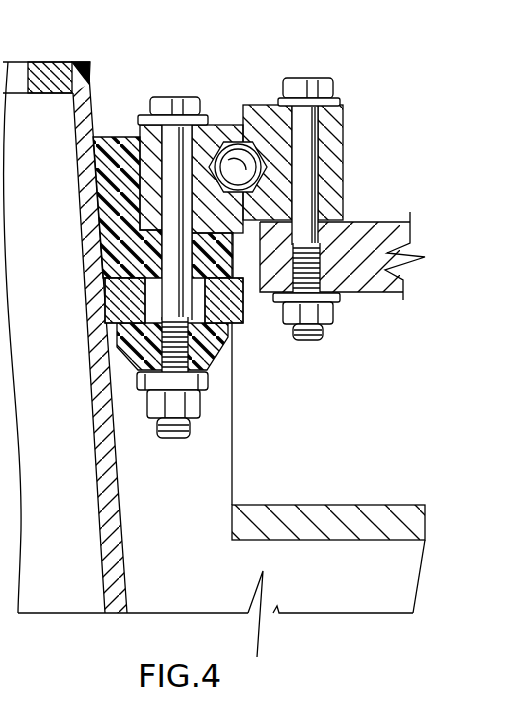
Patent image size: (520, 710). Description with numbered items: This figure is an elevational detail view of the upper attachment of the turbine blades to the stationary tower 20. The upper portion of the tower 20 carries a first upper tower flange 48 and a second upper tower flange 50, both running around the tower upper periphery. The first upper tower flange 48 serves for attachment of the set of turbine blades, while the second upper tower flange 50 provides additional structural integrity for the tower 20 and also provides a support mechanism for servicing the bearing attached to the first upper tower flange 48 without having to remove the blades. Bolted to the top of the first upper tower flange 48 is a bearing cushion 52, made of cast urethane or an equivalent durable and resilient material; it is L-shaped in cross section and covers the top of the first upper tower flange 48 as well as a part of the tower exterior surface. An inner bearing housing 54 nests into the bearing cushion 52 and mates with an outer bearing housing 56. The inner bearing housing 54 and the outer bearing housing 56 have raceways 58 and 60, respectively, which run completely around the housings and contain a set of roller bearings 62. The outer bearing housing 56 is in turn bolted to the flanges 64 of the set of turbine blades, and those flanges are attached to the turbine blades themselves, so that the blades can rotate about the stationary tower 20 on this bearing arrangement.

The tower 20 is at (98, 516).
The first upper tower flange 48 is at (108, 307).
The second upper tower flange 50 is at (395, 504).
The bearing cushion 52 is at (107, 137).
The inner bearing housing 54 is at (213, 122).
The outer bearing housing 56 is at (343, 112).
The raceway 58 is at (222, 121).
The raceway 60 is at (268, 166).
The roller bearings 62 is at (242, 107).
The flanges 64 is at (385, 296).